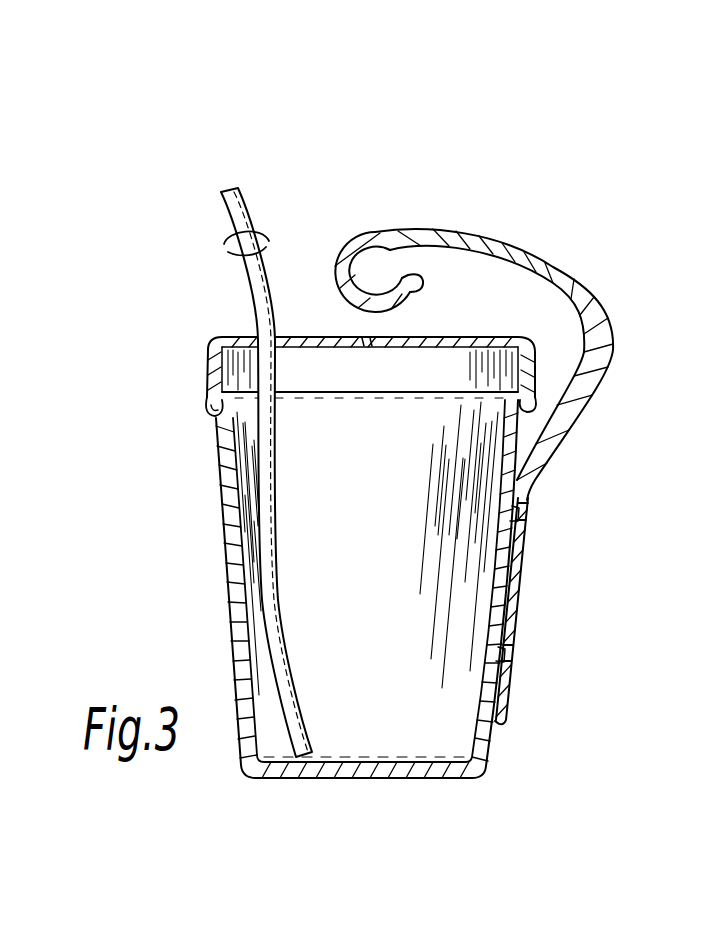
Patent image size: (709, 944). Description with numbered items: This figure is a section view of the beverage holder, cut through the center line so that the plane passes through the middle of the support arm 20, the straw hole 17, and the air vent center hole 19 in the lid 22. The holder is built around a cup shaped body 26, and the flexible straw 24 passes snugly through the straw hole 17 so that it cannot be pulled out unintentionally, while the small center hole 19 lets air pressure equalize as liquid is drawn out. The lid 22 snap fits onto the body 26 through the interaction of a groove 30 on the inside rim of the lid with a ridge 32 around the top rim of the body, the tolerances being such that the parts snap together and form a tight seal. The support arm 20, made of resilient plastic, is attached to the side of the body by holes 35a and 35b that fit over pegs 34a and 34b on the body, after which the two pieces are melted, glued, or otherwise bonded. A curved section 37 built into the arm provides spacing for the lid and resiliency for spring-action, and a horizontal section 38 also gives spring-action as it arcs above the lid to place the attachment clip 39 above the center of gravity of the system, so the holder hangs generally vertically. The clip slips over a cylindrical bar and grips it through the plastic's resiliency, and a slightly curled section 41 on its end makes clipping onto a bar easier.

The straw hole 17 is at (256, 337).
The center hole 19 is at (360, 337).
The support arm 20 is at (500, 437).
The lid 22 is at (318, 307).
The flexible straw 24 is at (247, 273).
The cup shaped body 26 is at (361, 589).
The groove 30 is at (208, 400).
The ridge 32 is at (216, 414).
The peg 34a is at (527, 519).
The peg 34b is at (509, 660).
The hole 35a is at (533, 488).
The hole 35b is at (508, 650).
The curved section 37 is at (616, 338).
The horizontal section 38 is at (510, 247).
The attachment clip 39 is at (362, 293).
The curled section 41 is at (410, 276).